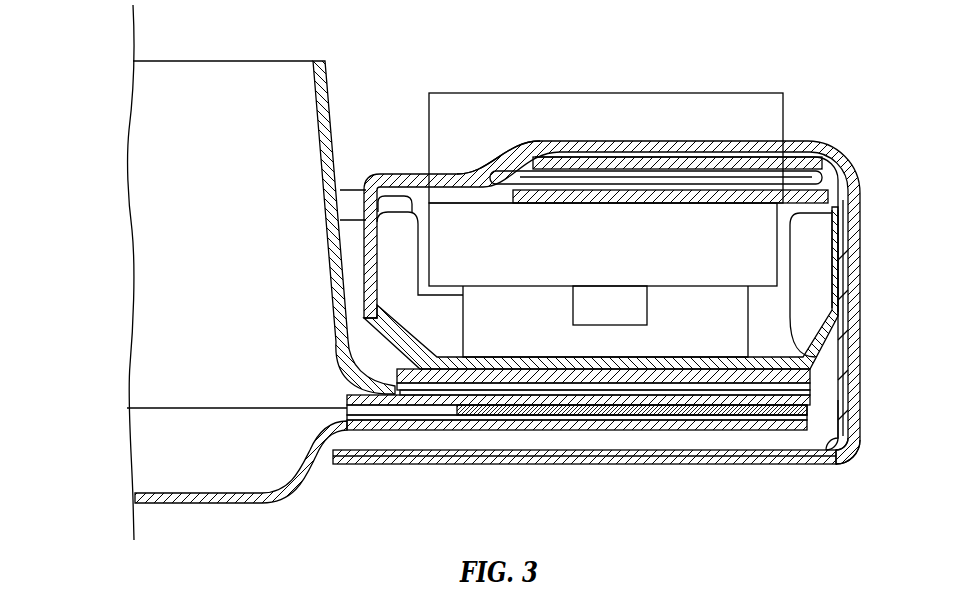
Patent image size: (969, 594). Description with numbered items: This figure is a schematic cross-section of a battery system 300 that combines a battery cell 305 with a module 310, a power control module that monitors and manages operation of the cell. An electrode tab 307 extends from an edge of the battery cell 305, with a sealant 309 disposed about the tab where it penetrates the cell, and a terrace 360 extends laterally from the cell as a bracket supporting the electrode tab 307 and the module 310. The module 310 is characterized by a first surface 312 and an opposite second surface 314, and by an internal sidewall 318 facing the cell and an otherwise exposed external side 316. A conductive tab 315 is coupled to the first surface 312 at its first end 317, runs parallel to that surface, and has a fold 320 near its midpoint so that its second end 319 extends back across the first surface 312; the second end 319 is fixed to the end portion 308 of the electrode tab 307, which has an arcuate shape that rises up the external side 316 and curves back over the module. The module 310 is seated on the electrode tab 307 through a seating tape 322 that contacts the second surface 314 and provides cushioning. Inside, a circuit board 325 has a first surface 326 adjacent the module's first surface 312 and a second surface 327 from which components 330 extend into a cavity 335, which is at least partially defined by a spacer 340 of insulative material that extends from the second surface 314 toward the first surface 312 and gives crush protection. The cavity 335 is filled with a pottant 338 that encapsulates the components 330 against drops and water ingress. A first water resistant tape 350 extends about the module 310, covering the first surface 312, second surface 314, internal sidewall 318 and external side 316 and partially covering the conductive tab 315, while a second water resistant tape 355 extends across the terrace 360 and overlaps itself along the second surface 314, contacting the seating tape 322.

The battery system 300 is at (112, 74).
The battery cell 305 is at (131, 348).
The electrode tab 307 is at (848, 448).
The end portion 308 is at (728, 198).
The sealant 309 is at (365, 417).
The module 310 is at (843, 240).
The first surface 312 is at (455, 178).
The second surface 314 is at (640, 362).
The conductive tab 315 is at (642, 158).
The external side 316 is at (840, 340).
The first end 317 is at (603, 165).
The internal sidewall 318 is at (372, 240).
The second end 319 is at (517, 150).
The fold 320 is at (856, 210).
The seating tape 322 is at (840, 426).
The circuit board 325 is at (836, 296).
The first surface 326 is at (782, 205).
The second surface 327 is at (697, 288).
The components 330 is at (580, 326).
The cavity 335 is at (495, 362).
The pottant 338 is at (630, 400).
The spacer 340 is at (843, 374).
The first water resistant tape 350 is at (700, 178).
The second water resistant tape 355 is at (773, 463).
The terrace 360 is at (620, 452).